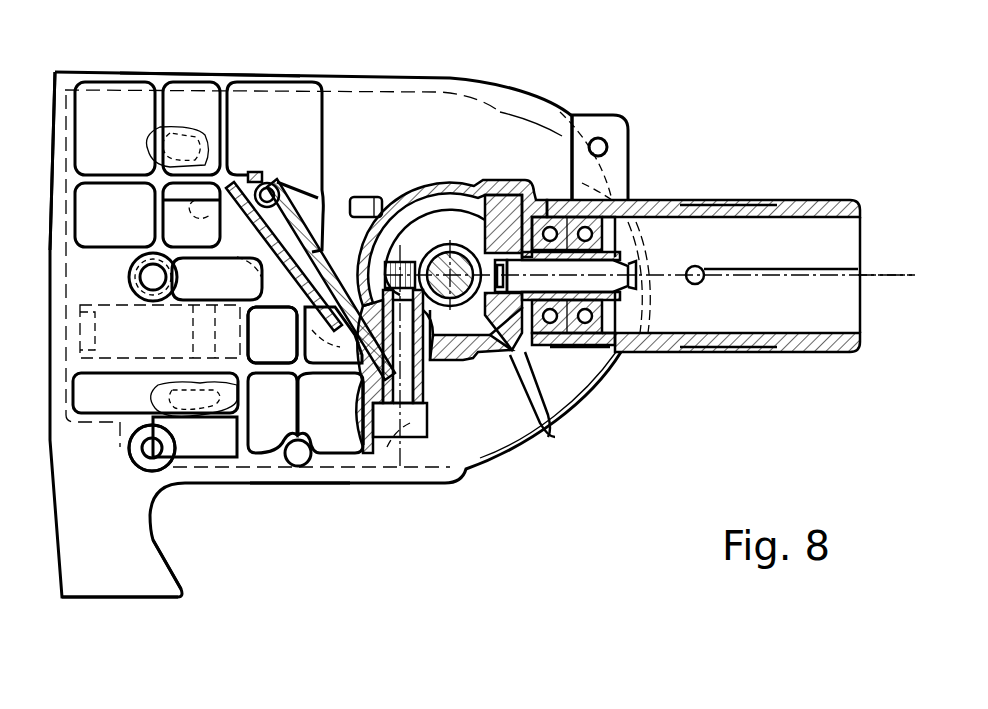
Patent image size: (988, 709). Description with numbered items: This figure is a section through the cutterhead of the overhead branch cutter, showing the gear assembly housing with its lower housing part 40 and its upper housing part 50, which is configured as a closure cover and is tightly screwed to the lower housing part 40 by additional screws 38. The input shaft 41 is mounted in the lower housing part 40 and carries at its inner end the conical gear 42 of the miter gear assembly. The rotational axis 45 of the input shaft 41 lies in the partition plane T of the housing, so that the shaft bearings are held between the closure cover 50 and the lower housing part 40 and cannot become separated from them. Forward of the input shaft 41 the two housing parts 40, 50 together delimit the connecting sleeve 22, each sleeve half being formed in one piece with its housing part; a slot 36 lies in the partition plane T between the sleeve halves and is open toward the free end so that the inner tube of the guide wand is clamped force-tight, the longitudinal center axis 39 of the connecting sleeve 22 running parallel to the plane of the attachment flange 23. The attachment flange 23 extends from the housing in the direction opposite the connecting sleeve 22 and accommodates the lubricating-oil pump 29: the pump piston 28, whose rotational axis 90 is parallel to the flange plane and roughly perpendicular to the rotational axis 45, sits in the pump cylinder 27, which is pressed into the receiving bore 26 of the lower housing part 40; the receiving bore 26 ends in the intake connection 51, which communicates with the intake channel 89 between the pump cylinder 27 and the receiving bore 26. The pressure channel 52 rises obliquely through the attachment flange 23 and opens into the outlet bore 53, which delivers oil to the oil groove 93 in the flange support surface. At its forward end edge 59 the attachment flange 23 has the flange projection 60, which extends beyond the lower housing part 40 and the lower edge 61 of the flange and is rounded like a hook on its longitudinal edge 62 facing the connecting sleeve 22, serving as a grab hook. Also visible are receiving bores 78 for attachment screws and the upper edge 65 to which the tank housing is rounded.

The connecting sleeve 22 is at (814, 350).
The attachment flange 23 is at (121, 113).
The receiving bore 26 is at (500, 428).
The pump cylinder 27 is at (378, 440).
The pump piston 28 is at (356, 377).
The lubricating-oil pump 29 is at (312, 343).
The slot 36 is at (752, 282).
The additional screws 38 is at (364, 197).
The longitudinal center axis 39 is at (900, 270).
The lower housing part 40 is at (552, 350).
The input shaft 41 is at (640, 330).
The conical gear 42 is at (495, 185).
The rotational axis 45 is at (658, 238).
The upper housing part 50 is at (515, 187).
The intake connection 51 is at (418, 420).
The pressure channel 52 is at (298, 195).
The outlet bore 53 is at (277, 180).
The forward end edge 59 is at (48, 88).
The flange projection 60 is at (122, 580).
The lower edge 61 is at (300, 484).
The longitudinal edge 62 is at (157, 537).
The upper edge 65 is at (190, 71).
The receiving bore 78 is at (601, 138).
The intake channel 89 is at (437, 378).
The rotational axis 90 is at (397, 455).
The oil groove 93 is at (165, 216).
The partition plane T is at (671, 273).